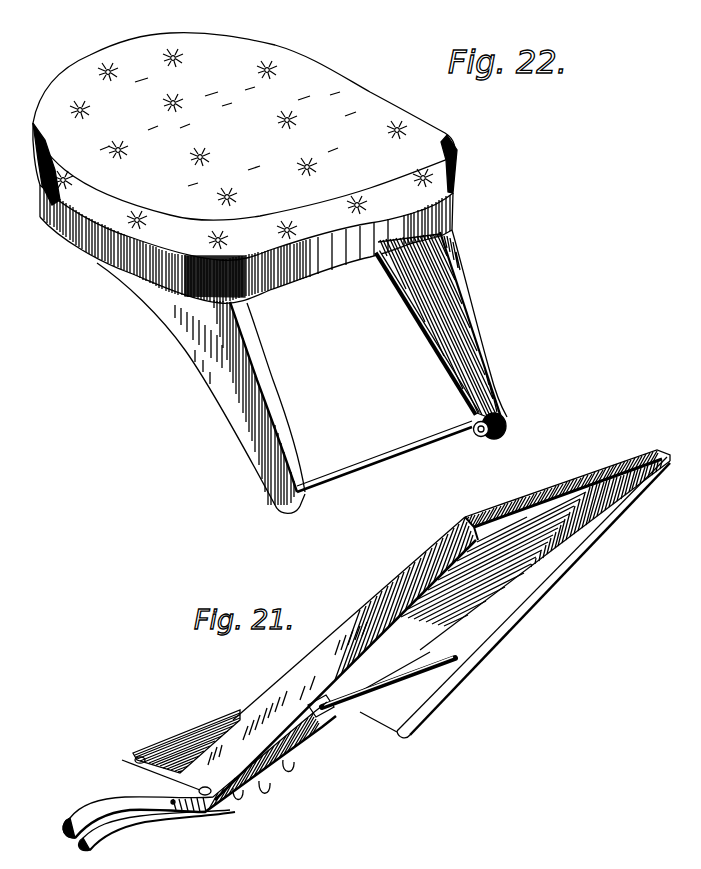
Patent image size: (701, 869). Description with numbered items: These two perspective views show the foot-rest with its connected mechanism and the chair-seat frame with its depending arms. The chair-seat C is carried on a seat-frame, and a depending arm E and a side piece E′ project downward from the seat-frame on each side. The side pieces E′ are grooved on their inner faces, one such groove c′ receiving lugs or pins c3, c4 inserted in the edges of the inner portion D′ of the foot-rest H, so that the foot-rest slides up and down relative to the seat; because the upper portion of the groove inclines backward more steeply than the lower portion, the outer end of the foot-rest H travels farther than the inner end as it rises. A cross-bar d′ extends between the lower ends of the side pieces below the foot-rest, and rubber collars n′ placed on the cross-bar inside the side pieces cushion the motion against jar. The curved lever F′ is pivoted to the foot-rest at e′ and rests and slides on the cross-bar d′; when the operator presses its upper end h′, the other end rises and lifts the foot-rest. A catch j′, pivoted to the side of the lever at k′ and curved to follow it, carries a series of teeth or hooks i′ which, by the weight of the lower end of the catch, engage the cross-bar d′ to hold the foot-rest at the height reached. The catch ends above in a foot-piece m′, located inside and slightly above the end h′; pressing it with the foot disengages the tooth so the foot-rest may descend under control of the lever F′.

In FIG. 22, the seat cushion C is at (245, 147).
In FIG. 22, the left leg E is at (240, 397).
In FIG. 22, the side piece E′ is at (476, 317).
In FIG. 22, the groove c′ is at (447, 333).
In FIG. 22, the cross-bar d′ is at (367, 462).
In FIG. 22, the rubber cushion collar n′ is at (478, 438).
In FIG. 21, the foot-rest H is at (537, 603).
In FIG. 21, the pivot of the lever e′ is at (420, 683).
In FIG. 21, the inner portion of the foot-rest D′ is at (180, 745).
In FIG. 21, the lug or pin c3 is at (135, 760).
In FIG. 21, the lug or pin c4 is at (200, 781).
In FIG. 21, the curved lever F′ is at (168, 840).
In FIG. 21, the pivoted catch j′ is at (112, 798).
In FIG. 21, the pivot of the catch k′ is at (172, 802).
In FIG. 21, the upper end of the lever h′ is at (58, 828).
In FIG. 21, the foot-piece m′ is at (90, 841).
In FIG. 21, the teeth or hooks i′ is at (307, 770).